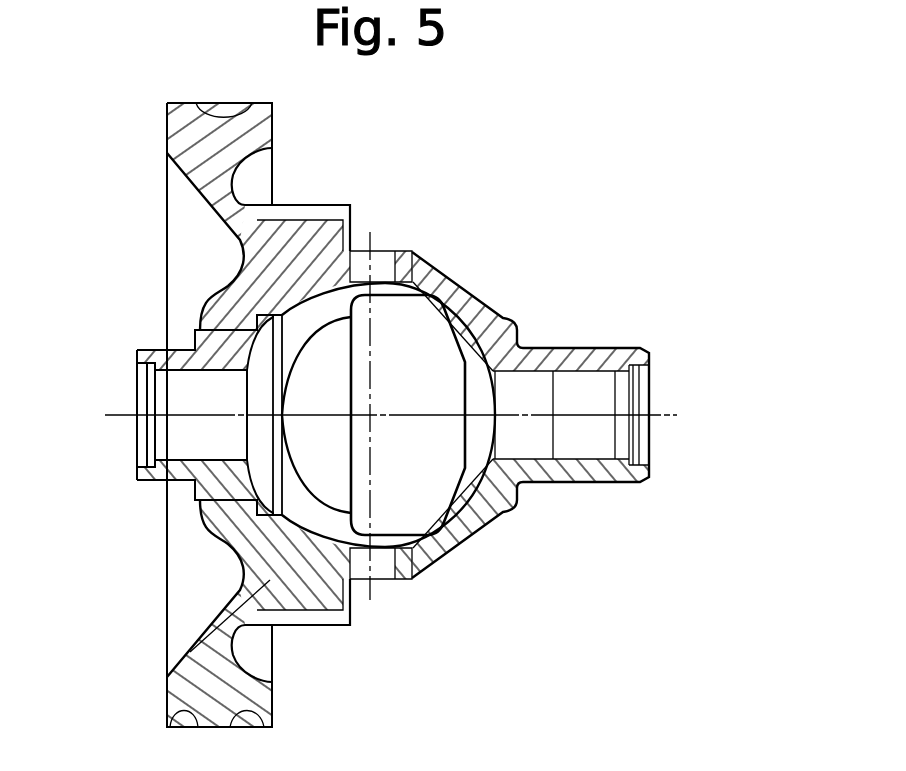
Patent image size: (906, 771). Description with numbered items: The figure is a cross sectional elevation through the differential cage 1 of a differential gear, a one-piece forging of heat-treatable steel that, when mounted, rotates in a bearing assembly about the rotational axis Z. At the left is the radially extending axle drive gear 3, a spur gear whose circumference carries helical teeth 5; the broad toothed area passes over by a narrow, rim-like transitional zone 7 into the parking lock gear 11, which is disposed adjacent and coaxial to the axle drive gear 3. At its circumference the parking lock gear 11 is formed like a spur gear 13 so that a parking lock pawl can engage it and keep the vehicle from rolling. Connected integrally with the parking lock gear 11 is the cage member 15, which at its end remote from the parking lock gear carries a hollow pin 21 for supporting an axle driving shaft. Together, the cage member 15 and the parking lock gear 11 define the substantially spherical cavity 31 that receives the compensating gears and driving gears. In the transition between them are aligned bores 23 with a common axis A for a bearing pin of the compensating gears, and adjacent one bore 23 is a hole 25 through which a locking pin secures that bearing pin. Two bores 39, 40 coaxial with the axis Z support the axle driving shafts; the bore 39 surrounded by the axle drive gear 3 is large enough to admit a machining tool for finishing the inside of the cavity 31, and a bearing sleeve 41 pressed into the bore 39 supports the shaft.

The differential cage 1 is at (377, 213).
The axle drive gear 3 is at (168, 128).
The helical teeth 5 is at (222, 106).
The transitional zone 7 is at (225, 202).
The parking lock gear 11 is at (303, 585).
The spur gear 13 is at (300, 215).
The cage member 15 is at (483, 290).
The hollow pin 21 is at (583, 358).
The bores 23 is at (380, 257).
The hole 25 is at (410, 262).
The spherical cavity 31 is at (430, 384).
The bore 39 is at (150, 488).
The bore 40 is at (642, 392).
The bearing sleeve 41 is at (190, 348).
The axis A is at (368, 593).
The rotational axis Z is at (530, 417).